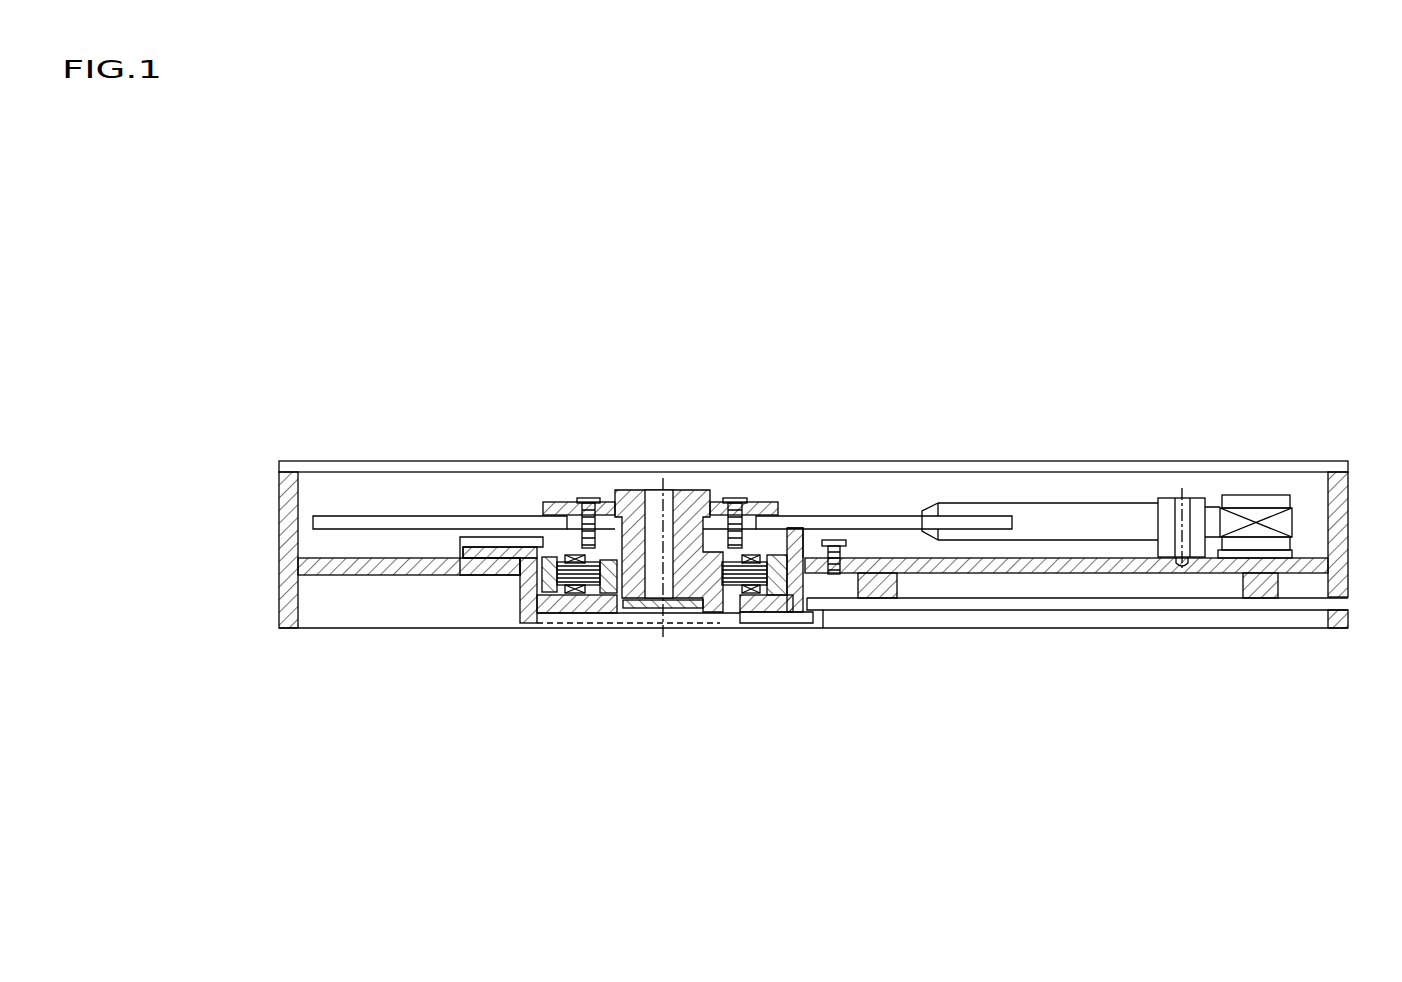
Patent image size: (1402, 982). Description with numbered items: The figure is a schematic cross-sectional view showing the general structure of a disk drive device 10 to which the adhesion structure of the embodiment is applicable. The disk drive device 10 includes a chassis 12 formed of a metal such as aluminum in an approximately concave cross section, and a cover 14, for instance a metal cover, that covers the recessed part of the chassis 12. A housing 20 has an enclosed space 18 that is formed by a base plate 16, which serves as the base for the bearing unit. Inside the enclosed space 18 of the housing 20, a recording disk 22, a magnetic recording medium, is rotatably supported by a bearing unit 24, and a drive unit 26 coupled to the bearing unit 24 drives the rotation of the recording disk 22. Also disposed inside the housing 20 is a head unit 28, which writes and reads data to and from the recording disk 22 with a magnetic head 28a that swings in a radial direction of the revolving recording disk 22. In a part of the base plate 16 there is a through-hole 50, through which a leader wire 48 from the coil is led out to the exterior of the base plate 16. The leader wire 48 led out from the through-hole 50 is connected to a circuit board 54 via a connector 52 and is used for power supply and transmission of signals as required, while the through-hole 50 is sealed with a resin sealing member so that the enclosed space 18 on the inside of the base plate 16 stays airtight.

The disk drive device 10 is at (983, 350).
The chassis 12 is at (412, 573).
The cover 14 is at (498, 462).
The base plate 16 is at (533, 603).
The enclosed space 18 is at (407, 506).
The housing 20 is at (279, 491).
The recording disk 22 is at (866, 515).
The bearing unit 24 is at (690, 535).
The drive unit 26 is at (588, 594).
The head unit 28 is at (1098, 502).
The magnetic head 28a is at (925, 508).
The leader wire 48 is at (752, 610).
The through-hole 50 is at (733, 608).
The connector 52 is at (830, 618).
The circuit board 54 is at (1030, 611).